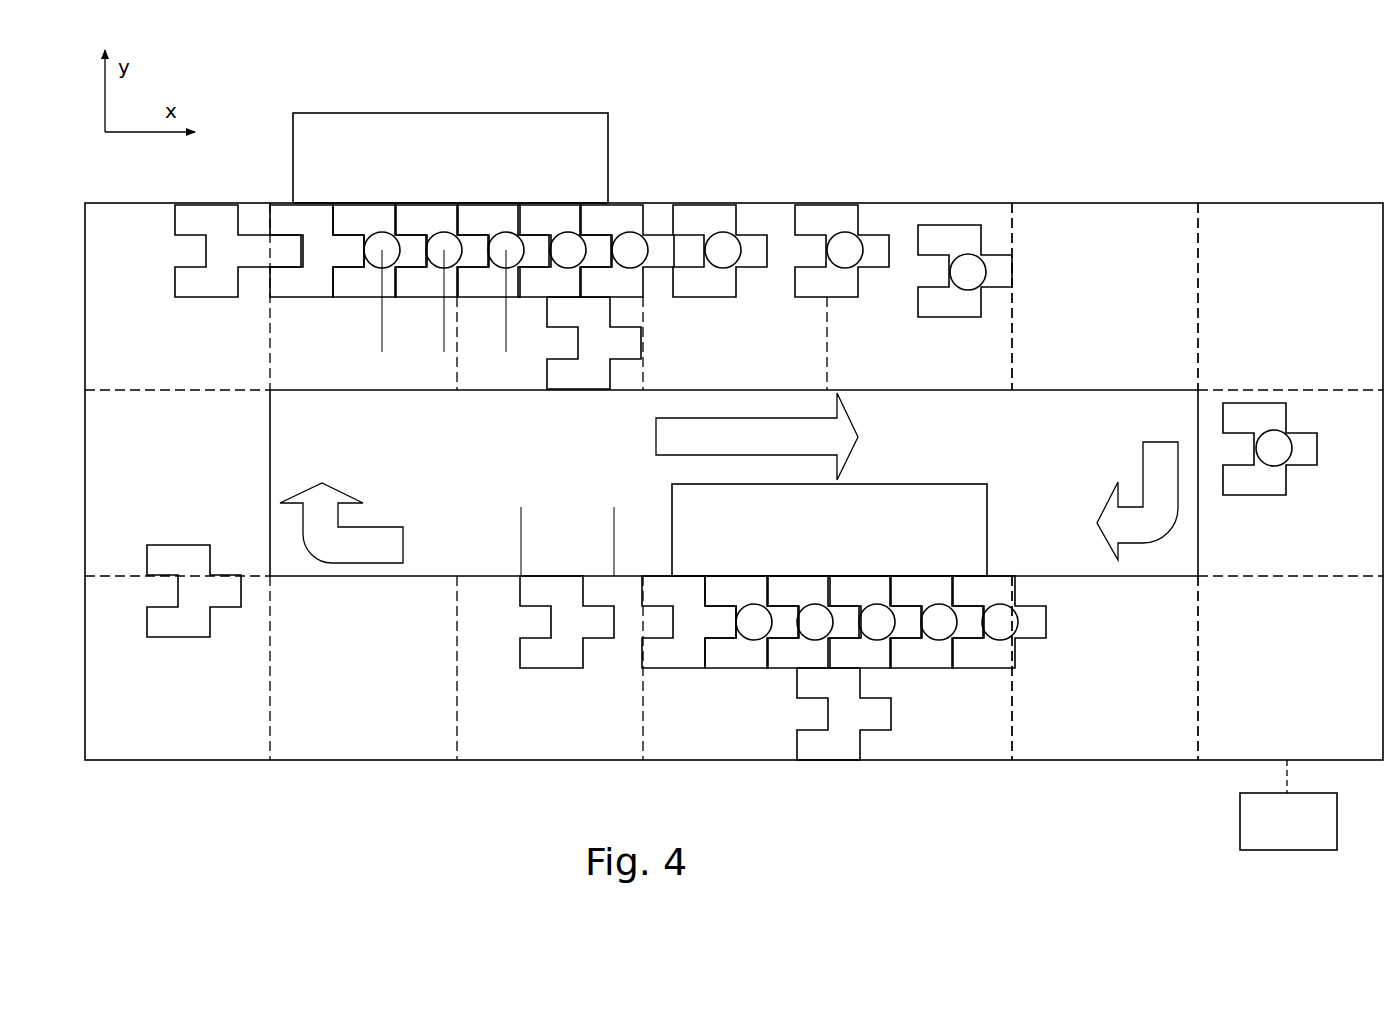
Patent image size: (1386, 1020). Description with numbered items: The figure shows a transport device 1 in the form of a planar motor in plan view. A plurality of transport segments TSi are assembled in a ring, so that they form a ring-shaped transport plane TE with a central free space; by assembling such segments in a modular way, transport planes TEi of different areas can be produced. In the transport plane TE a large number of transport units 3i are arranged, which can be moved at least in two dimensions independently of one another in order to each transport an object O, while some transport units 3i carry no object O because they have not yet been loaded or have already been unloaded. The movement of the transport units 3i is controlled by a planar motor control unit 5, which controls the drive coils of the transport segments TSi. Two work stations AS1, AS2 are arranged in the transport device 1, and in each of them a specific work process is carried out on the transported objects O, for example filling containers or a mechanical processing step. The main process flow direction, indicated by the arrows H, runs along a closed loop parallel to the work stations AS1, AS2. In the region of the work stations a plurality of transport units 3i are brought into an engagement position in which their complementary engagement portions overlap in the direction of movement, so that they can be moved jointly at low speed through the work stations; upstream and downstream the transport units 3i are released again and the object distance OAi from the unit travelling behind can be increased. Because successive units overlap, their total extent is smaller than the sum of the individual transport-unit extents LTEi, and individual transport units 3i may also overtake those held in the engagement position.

The transport device 1 is at (1187, 112).
The transport units 3i is at (222, 237).
The object O is at (845, 250).
The first work station AS1 is at (455, 171).
The second work station AS2 is at (850, 544).
The object distance OAi is at (444, 341).
The transport-unit extent LTEi is at (614, 518).
The transport plane TE is at (1104, 312).
The transport plane TEi is at (1260, 418).
The transport segments TSi is at (1277, 240).
The main transport direction H is at (729, 478).
The planar motor control unit 5 is at (1296, 838).